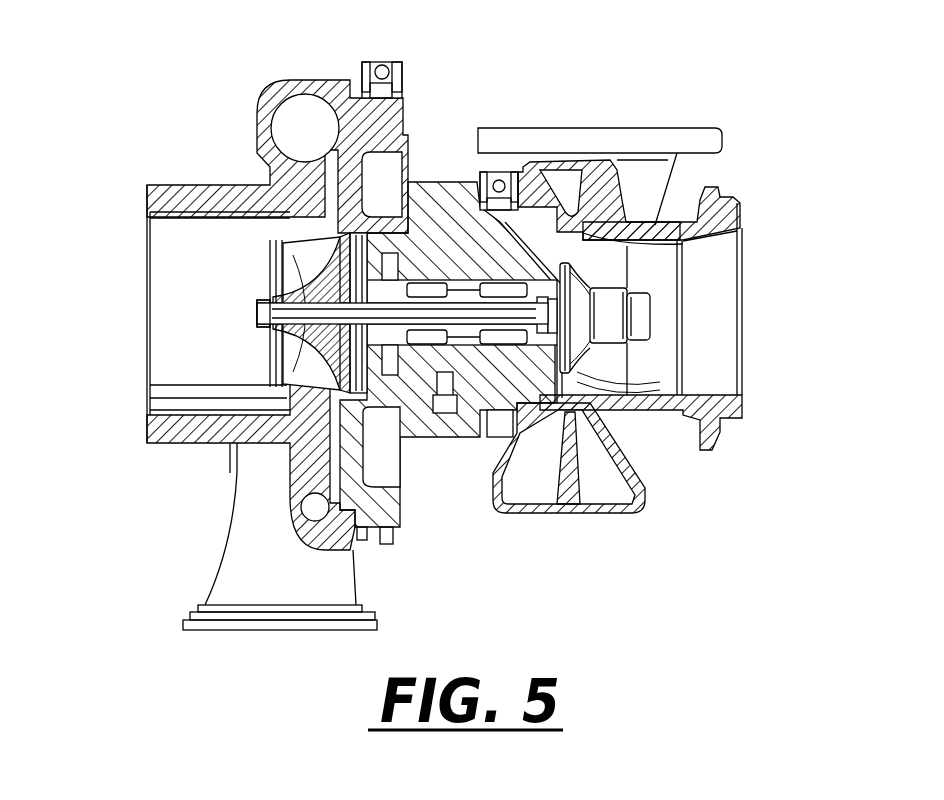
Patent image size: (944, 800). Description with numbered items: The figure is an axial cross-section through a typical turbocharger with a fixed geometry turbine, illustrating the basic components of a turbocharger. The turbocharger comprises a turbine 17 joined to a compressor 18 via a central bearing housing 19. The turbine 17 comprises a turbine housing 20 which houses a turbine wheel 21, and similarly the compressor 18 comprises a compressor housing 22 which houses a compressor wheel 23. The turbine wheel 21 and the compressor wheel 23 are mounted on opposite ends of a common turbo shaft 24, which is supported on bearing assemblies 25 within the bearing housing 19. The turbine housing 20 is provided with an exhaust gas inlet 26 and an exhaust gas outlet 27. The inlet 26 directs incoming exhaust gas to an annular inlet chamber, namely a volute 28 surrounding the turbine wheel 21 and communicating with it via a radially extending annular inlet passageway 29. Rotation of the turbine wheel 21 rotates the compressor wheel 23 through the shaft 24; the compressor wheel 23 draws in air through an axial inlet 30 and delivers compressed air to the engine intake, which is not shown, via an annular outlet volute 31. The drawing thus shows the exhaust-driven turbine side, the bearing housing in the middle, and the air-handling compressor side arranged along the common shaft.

The turbine 17 is at (645, 312).
The compressor 18 is at (241, 329).
The central bearing housing 19 is at (409, 332).
The turbine housing 20 is at (637, 419).
The turbine wheel 21 is at (618, 363).
The compressor housing 22 is at (200, 430).
The compressor wheel 23 is at (324, 261).
The common turbo shaft 24 is at (268, 335).
The bearing assemblies 25 is at (480, 275).
The exhaust gas inlet 26 is at (560, 137).
The exhaust gas outlet 27 is at (693, 302).
The volute 28 is at (590, 463).
The annular inlet passageway 29 is at (565, 489).
The axial inlet 30 is at (183, 260).
The annular outlet volute 31 is at (289, 107).